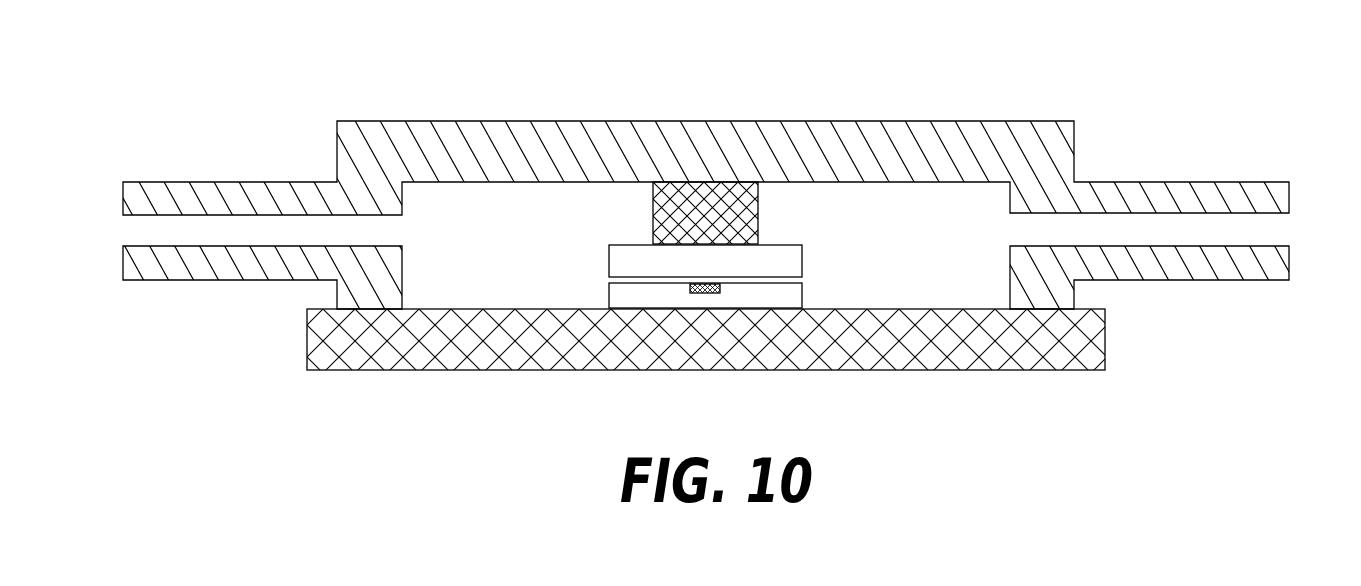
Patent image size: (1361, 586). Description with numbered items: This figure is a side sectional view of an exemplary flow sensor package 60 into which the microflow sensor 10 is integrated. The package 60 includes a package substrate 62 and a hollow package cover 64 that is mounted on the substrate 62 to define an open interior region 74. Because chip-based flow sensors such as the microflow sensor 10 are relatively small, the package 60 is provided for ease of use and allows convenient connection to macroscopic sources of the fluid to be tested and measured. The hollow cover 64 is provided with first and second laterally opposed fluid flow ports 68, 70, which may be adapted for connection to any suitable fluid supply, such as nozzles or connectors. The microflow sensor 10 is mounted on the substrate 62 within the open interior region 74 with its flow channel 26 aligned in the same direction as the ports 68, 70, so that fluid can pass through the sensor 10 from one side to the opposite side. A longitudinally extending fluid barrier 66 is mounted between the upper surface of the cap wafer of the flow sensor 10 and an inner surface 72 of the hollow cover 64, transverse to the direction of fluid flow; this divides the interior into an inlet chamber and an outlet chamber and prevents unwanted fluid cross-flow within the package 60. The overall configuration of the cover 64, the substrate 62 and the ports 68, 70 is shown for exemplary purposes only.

The microflow sensor 10 is at (790, 300).
The flow channel 26 is at (603, 277).
The flow sensor package 60 is at (702, 239).
The package substrate 62 is at (1105, 335).
The hollow package cover 64 is at (600, 132).
The fluid barrier 66 is at (758, 207).
The first fluid flow port 68 is at (122, 231).
The second fluid flow port 70 is at (1286, 229).
The inner surface 72 is at (533, 183).
The open interior region 74 is at (931, 283).